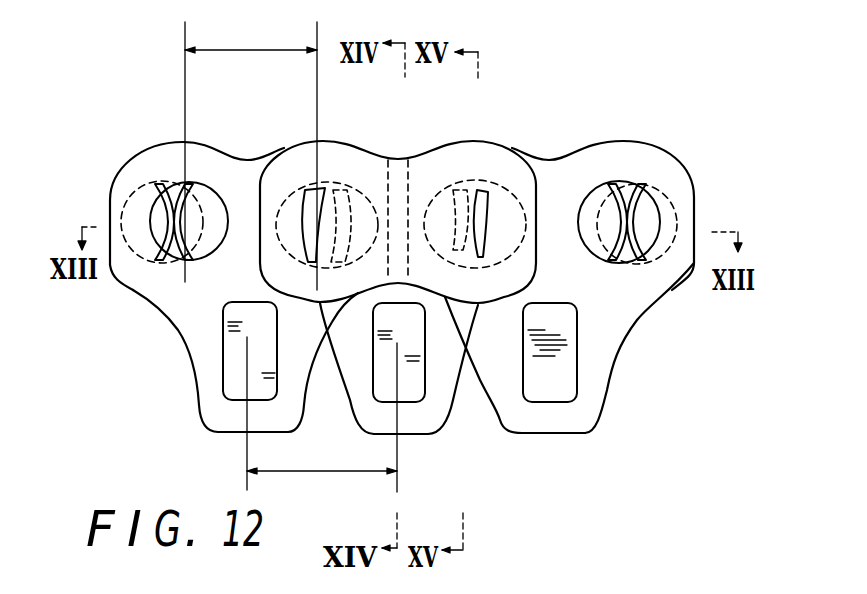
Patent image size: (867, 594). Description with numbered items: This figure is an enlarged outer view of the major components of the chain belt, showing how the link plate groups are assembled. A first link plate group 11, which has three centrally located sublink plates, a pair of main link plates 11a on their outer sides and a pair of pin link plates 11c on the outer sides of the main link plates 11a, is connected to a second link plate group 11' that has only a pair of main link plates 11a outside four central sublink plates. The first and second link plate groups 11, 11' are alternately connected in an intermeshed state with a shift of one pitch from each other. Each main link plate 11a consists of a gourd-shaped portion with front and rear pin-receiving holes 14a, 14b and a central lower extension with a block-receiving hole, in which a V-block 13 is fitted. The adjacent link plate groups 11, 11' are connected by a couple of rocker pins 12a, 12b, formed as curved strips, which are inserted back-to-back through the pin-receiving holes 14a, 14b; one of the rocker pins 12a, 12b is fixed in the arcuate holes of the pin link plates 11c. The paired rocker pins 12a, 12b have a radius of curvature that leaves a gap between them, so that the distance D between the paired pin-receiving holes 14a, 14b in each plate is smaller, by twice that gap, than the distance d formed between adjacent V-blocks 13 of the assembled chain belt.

The first link plate group 11 is at (398, 201).
The second link plate group 11' is at (399, 172).
The main link plate 11a is at (142, 165).
The pin link plate 11c is at (347, 162).
The rocker pin 12a is at (177, 258).
The rocker pin 12b is at (181, 262).
The V-block 13 is at (228, 384).
The pin-receiving hole 14a is at (200, 184).
The pin-receiving hole 14b is at (133, 246).
The distance between paired pin-receiving holes D is at (251, 156).
The distance between adjacent V-blocks d is at (322, 416).